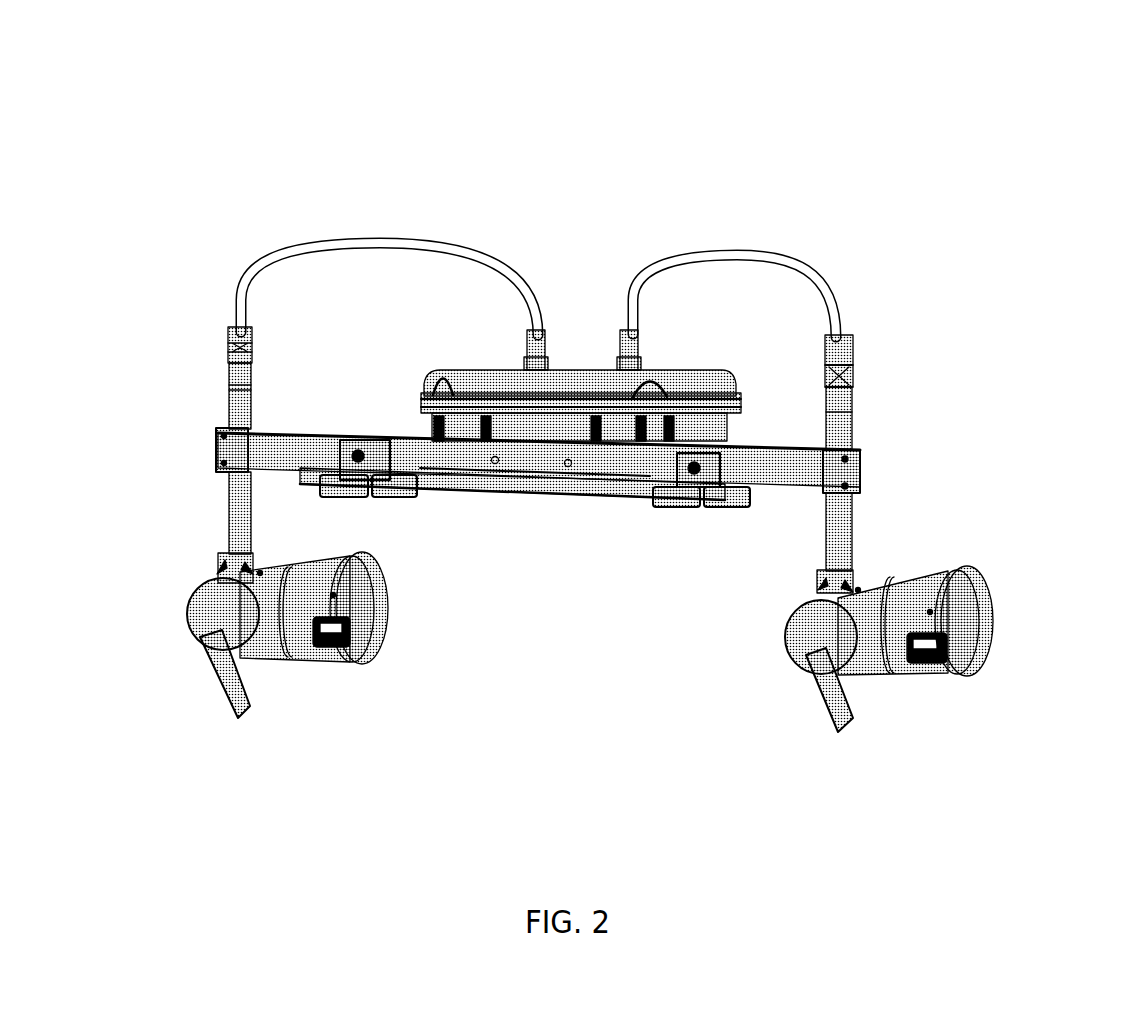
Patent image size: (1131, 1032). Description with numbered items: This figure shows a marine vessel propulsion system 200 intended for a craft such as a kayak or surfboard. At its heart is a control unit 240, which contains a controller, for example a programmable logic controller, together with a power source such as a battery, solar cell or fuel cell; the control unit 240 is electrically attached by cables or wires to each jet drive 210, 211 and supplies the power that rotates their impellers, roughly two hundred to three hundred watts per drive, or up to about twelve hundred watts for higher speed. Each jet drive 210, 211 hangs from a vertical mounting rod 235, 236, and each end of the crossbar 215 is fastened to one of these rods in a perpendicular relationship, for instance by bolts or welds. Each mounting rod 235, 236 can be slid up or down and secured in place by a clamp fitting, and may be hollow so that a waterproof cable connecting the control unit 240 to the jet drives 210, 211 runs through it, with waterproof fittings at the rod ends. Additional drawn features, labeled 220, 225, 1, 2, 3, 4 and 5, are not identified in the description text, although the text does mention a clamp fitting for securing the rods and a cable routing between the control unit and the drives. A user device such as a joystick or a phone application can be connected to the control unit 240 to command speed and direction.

The marine vessel propulsion system 200 is at (733, 150).
The crossbar 215 is at (278, 432).
The clamp 220 is at (356, 451).
The mounting bracket 225 is at (343, 497).
The vertical mounting rod 235 is at (852, 544).
The vertical mounting rod 236 is at (222, 508).
The control unit 240 is at (518, 492).
The jet drive 210 is at (955, 657).
The jet drive 211 is at (266, 658).
The first thruster 1 is at (316, 686).
The second thruster 2 is at (907, 649).
The bracket 3 is at (380, 482).
The housing 4 is at (550, 433).
The bar 5 is at (627, 463).